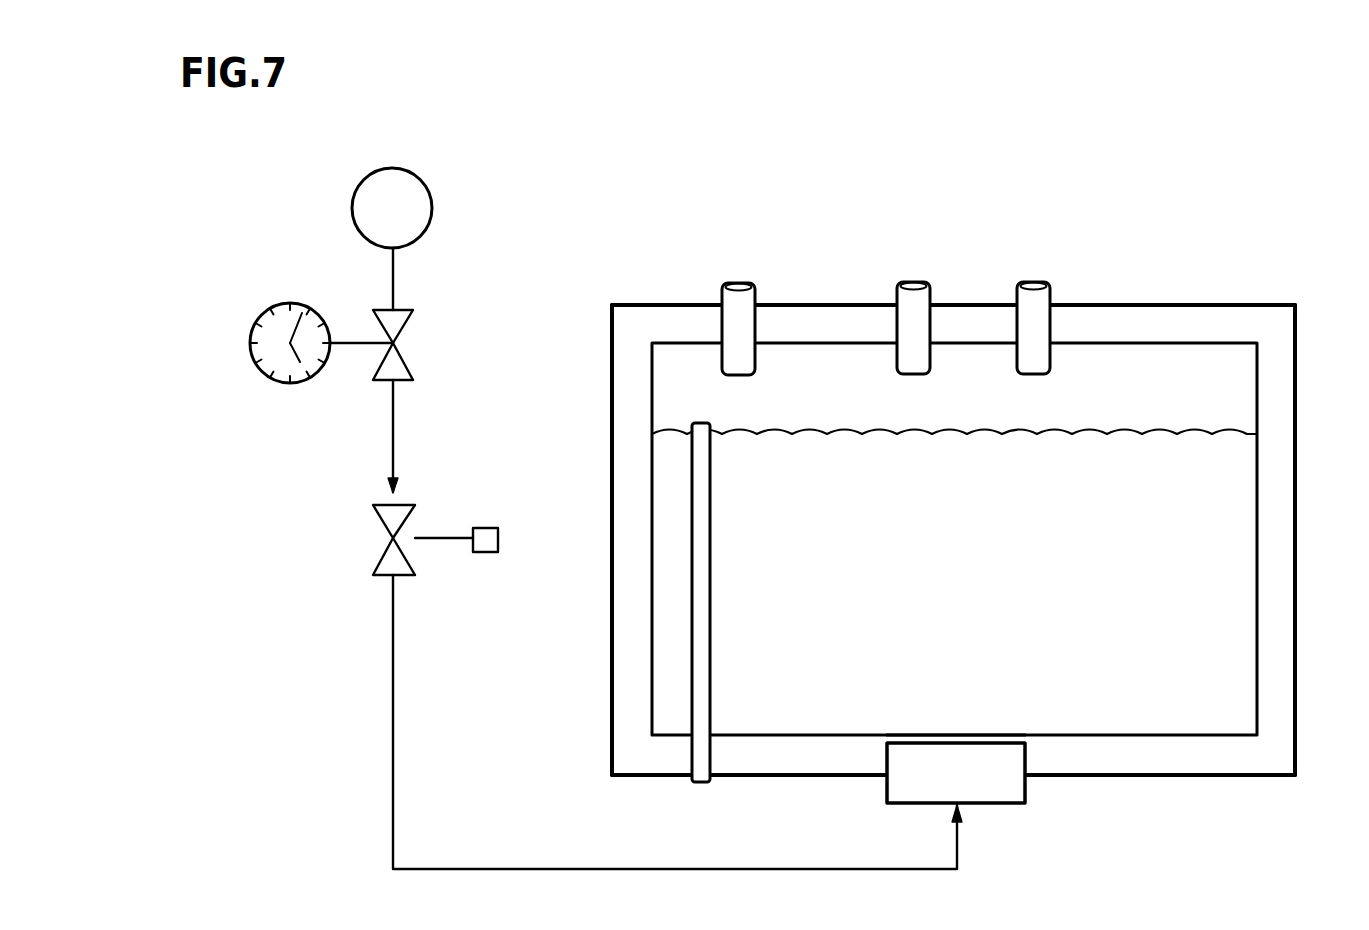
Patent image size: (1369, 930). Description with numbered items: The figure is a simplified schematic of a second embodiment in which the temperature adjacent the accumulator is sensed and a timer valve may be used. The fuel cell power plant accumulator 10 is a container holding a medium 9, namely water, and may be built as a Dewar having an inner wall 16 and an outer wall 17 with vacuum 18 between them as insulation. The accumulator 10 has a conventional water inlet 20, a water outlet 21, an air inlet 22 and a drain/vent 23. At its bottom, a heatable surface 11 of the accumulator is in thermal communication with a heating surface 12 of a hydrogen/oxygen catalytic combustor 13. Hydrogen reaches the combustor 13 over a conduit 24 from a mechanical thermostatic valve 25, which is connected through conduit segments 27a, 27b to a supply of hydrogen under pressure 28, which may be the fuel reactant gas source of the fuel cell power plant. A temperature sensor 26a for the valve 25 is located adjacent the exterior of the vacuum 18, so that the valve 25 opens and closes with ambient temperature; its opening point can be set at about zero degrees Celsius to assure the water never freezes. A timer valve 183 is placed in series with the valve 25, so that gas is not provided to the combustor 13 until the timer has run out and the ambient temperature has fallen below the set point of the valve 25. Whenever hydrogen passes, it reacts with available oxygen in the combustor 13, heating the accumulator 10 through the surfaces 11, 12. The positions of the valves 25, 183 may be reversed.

The fuel cell power plant accumulator 10 is at (918, 547).
The medium 9 is at (1108, 550).
The heatable surface 11 is at (943, 733).
The heating surface 12 is at (980, 758).
The hydrogen/oxygen catalytic combustor 13 is at (992, 804).
The inner wall 16 is at (1148, 343).
The outer wall 17 is at (1148, 303).
The vacuum 18 is at (662, 327).
The water inlet 20 is at (1065, 268).
The water outlet 21 is at (920, 285).
The air inlet 22 is at (775, 265).
The drain/vent 23 is at (708, 783).
The conduit 24 is at (788, 868).
The mechanical thermostatic valve 25 is at (390, 532).
The temperature sensor 26a is at (490, 530).
The conduit 27a is at (392, 293).
The conduit 27b is at (395, 410).
The supply of hydrogen under pressure 28 is at (367, 183).
The timer valve 183 is at (250, 347).